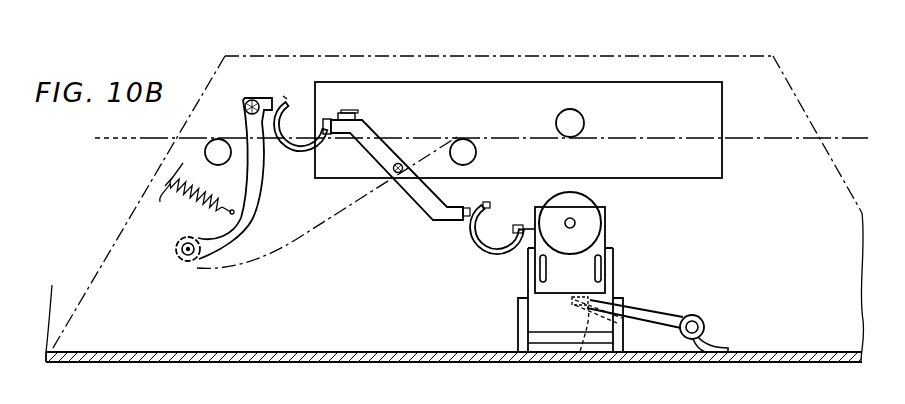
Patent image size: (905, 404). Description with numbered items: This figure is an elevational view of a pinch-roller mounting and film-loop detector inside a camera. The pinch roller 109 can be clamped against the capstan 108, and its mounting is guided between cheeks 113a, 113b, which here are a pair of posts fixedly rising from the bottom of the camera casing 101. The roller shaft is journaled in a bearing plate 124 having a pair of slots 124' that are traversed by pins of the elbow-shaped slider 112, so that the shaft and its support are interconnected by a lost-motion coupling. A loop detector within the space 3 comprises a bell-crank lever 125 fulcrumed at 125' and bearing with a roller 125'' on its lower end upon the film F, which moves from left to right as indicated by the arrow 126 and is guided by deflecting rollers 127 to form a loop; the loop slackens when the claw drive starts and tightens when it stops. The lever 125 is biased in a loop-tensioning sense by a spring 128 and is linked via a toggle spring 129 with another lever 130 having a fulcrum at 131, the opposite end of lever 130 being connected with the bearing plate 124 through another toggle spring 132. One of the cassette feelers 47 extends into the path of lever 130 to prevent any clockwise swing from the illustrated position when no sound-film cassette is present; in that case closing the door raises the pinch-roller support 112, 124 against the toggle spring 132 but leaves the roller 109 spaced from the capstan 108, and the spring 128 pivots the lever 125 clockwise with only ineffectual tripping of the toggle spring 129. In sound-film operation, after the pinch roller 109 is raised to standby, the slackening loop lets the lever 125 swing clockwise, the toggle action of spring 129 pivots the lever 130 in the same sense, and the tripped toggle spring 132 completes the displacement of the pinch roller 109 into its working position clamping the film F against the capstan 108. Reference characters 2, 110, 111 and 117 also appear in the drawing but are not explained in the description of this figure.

The apparatus 2 is at (742, 40).
The space 3 is at (779, 260).
The film F is at (507, 134).
The cassette feeler 47 is at (356, 113).
The camera casing 101 is at (752, 352).
The capstan 108 is at (582, 112).
The pinch roller 109 is at (601, 223).
The lever 110 is at (650, 318).
The path of pivot 111 is at (597, 342).
The elbow-shaped slider 112 is at (530, 316).
The cheek 113a is at (518, 343).
The cheek 113b is at (632, 350).
The pin 117 is at (552, 350).
The bearing plate 124 is at (530, 279).
The slots 124' is at (566, 274).
The bell-crank lever 125 is at (247, 178).
The fulcrum 125' is at (262, 90).
The roller 125'' is at (223, 245).
The arrow 126 is at (673, 124).
The deflecting rollers 127 is at (220, 140).
The spring 128 is at (178, 198).
The toggle spring 129 is at (286, 148).
The lever 130 is at (422, 201).
The fulcrum 131 is at (401, 163).
The toggle spring 132 is at (466, 232).